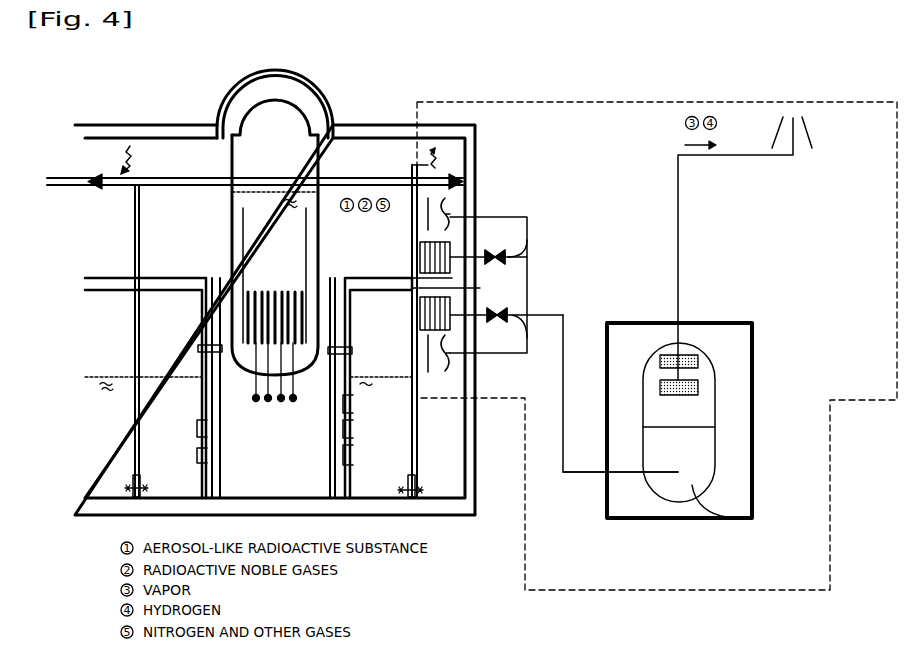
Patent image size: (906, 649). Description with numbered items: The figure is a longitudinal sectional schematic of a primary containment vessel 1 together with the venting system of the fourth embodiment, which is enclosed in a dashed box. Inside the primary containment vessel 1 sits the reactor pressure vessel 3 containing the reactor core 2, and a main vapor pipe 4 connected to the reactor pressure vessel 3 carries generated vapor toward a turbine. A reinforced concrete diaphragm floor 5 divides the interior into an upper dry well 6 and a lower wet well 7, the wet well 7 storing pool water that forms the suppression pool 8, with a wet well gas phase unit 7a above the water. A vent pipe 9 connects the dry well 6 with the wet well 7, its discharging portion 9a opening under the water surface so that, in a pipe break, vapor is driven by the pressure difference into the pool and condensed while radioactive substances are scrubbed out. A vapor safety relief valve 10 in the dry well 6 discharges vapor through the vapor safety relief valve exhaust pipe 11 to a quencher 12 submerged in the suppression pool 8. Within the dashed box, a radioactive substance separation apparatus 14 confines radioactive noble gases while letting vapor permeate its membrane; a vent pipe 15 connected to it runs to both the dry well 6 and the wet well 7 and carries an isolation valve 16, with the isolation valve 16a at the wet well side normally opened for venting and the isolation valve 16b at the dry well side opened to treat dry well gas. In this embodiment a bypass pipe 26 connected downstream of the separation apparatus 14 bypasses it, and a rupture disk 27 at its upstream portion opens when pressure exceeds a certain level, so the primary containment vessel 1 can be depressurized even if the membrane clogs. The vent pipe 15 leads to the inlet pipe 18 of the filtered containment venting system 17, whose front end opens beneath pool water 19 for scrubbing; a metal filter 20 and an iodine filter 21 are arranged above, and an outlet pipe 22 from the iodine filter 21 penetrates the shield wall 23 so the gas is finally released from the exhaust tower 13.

The primary containment vessel 1 is at (362, 131).
The reactor core 2 is at (302, 290).
The reactor pressure vessel 3 is at (320, 167).
The main vapor pipe 4 is at (165, 177).
The diaphragm floor 5 is at (123, 278).
The dry well 6 is at (93, 223).
The wet well 7 is at (95, 350).
The wet well gas phase unit 7a is at (381, 343).
The suppression pool 8 is at (447, 480).
The vent pipe 9 is at (338, 370).
The discharging portion of the vent pipe 9a is at (198, 450).
The vapor safety relief valve 10 is at (124, 144).
The vapor safety relief valve exhaust pipe 11 is at (133, 313).
The quencher 12 is at (134, 477).
The exhaust tower 13 is at (812, 140).
The radioactive substance separation apparatus 14 is at (482, 280).
The vent pipe 15 is at (563, 332).
The isolation valve 16 is at (527, 268).
The isolation valve at a wet well side 16a is at (526, 353).
The isolation valve at a dry well side 16b is at (531, 222).
The filtered containment venting system 17 is at (717, 453).
The inlet pipe 18 is at (660, 474).
The pool water for scrubbing 19 is at (727, 517).
The metal filter 20 is at (700, 387).
The iodine filter 21 is at (700, 362).
The outlet pipe 22 is at (677, 292).
The shield wall 23 is at (755, 487).
The bypass pipe 26 is at (495, 215).
The rupture disk 27 is at (460, 205).